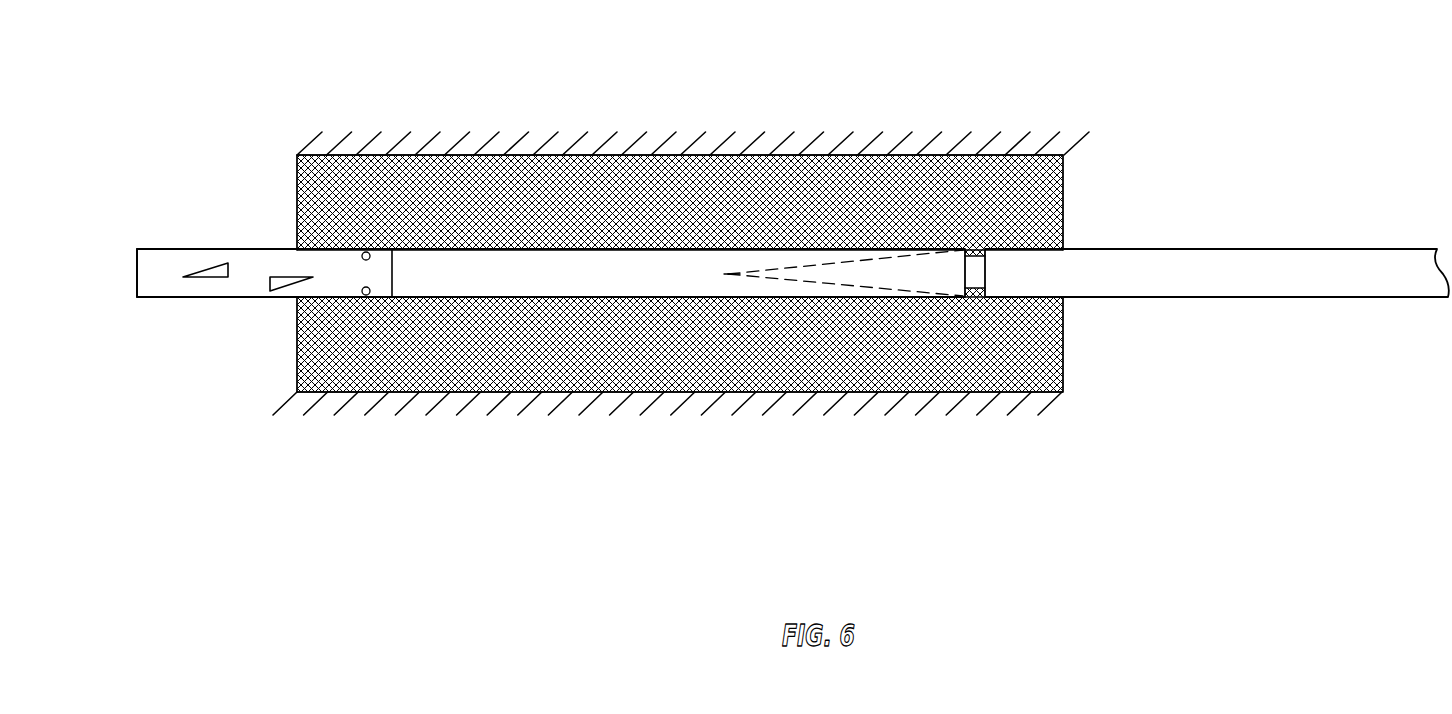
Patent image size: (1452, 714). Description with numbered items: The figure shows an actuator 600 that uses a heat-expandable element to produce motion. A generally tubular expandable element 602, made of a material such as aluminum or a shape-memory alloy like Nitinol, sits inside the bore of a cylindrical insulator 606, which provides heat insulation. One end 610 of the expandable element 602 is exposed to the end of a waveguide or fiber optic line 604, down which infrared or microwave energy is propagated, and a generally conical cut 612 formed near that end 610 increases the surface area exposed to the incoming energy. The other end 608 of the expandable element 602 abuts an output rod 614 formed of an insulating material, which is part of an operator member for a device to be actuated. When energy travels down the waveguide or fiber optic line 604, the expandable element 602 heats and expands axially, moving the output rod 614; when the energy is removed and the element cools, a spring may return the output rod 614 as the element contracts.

The actuator 600 is at (781, 216).
The expandable element 602 is at (660, 287).
The waveguide or fiber optic line 604 is at (1243, 287).
The cylindrical insulator 606 is at (1015, 221).
The other end of the expandable element 608 is at (395, 287).
The end of the expandable element 610 is at (985, 272).
The conical cut 612 is at (878, 288).
The output rod 614 is at (185, 249).